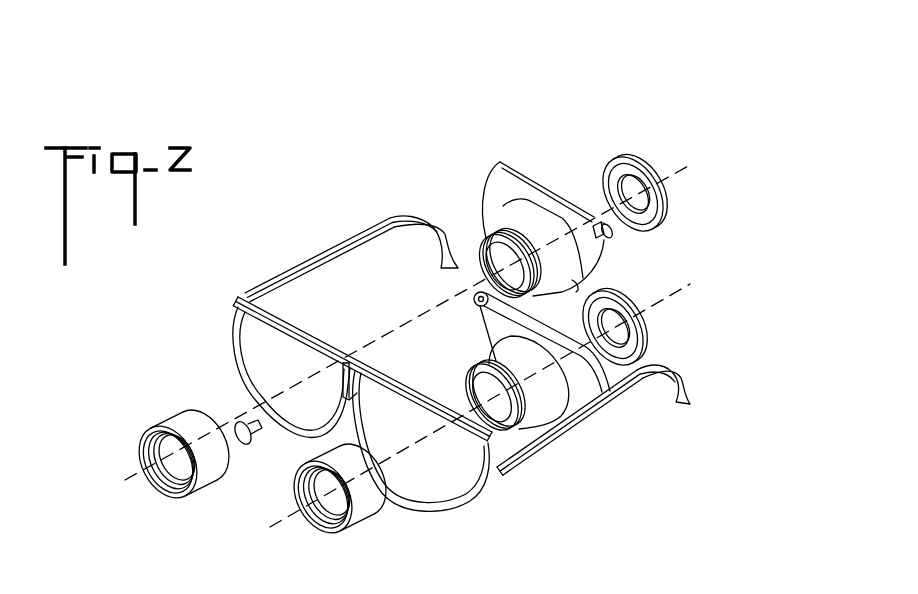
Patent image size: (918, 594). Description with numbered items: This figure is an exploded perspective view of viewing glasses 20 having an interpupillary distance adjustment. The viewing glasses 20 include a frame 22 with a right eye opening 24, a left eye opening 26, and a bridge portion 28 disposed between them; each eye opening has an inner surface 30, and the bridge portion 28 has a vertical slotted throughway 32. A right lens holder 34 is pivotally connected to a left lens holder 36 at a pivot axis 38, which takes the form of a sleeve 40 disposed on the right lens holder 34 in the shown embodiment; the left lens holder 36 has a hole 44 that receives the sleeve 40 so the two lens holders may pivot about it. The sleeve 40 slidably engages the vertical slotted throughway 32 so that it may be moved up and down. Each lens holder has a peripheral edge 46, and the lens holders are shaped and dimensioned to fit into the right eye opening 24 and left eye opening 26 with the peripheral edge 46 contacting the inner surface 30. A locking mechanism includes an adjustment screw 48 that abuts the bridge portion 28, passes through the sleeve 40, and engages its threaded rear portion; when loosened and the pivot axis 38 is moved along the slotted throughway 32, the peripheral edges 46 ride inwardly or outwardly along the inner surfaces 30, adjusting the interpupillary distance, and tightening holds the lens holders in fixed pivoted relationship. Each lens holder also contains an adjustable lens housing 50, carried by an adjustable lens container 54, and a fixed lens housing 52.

The viewing glasses 20 is at (627, 90).
The frame 22 is at (232, 328).
The right eye opening 24 is at (280, 370).
The left eye opening 26 is at (434, 462).
The bridge portion 28 is at (358, 352).
The inner surface 30 is at (302, 434).
The vertical slotted throughway 32 is at (343, 367).
The right lens holder 34 is at (492, 186).
The left lens holder 36 is at (590, 421).
The pivot axis 38 is at (393, 348).
The sleeve 40 is at (594, 238).
The hole 44 is at (474, 301).
The peripheral edge 46 is at (574, 284).
The adjustment screw 48 is at (246, 420).
The adjustable lens housing 50 is at (176, 425).
The fixed lens housing 52 is at (672, 172).
The adjustable lens container 54 is at (484, 238).